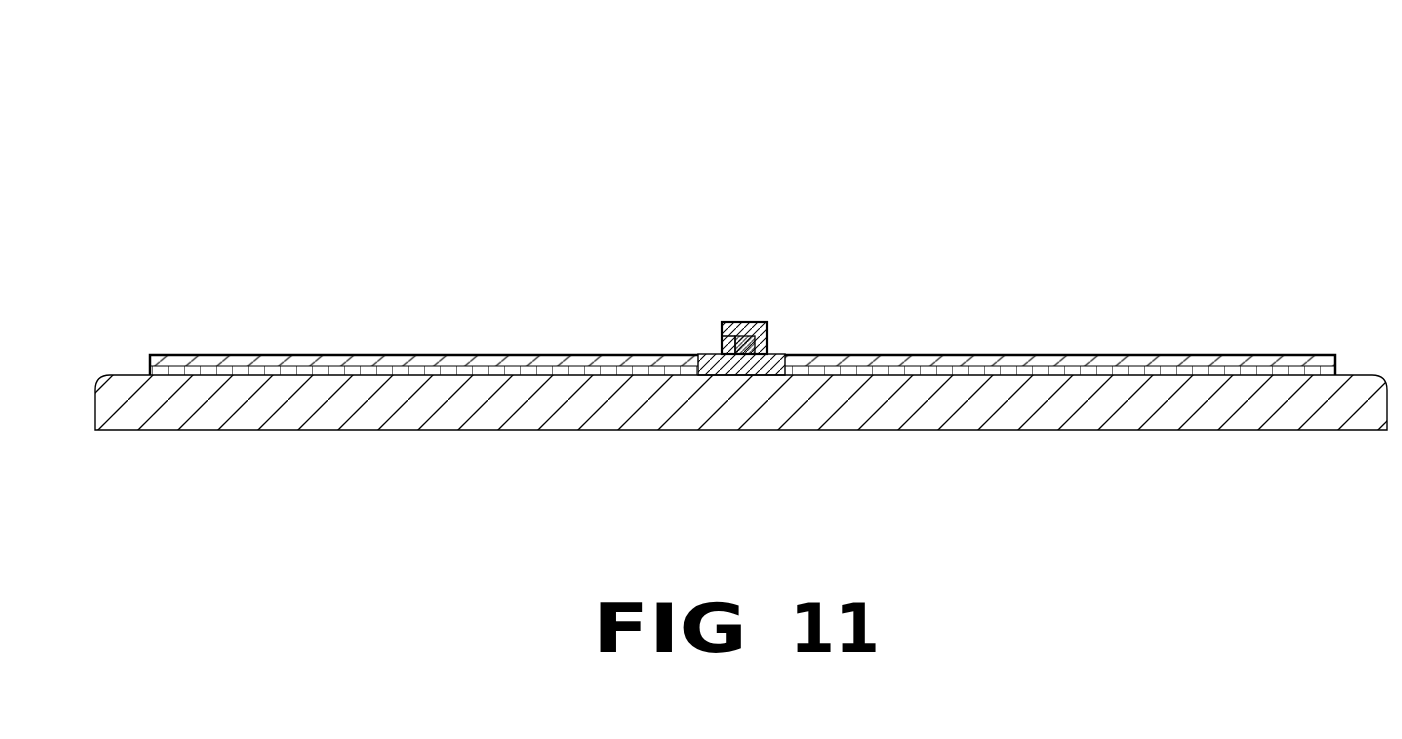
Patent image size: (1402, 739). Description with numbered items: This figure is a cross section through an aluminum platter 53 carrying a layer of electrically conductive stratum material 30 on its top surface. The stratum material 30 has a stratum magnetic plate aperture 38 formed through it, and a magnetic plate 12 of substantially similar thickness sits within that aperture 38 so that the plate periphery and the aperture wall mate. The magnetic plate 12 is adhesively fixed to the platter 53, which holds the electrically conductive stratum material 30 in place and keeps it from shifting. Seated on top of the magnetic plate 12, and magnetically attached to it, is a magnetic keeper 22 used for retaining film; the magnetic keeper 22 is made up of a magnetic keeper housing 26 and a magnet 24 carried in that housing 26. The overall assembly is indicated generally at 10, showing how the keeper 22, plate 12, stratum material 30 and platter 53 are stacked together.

The electronic assembly 10 is at (1061, 163).
The magnetic plate 12 is at (767, 372).
The magnetic keeper 22 is at (740, 323).
The magnet 24 is at (752, 345).
The magnetic keeper housing 26 is at (728, 337).
The electrically conductive stratum material 30 is at (455, 356).
The stratum magnetic plate aperture 38 is at (702, 368).
The platter 53 is at (517, 413).